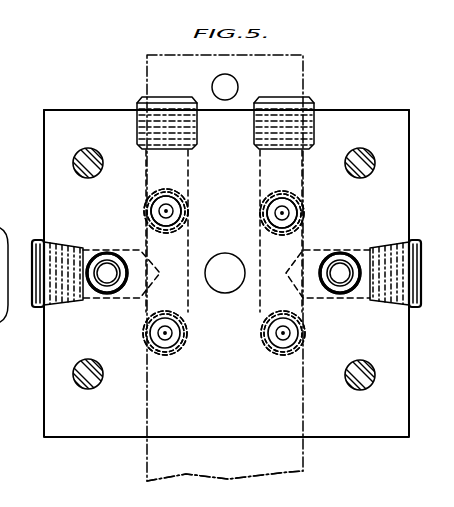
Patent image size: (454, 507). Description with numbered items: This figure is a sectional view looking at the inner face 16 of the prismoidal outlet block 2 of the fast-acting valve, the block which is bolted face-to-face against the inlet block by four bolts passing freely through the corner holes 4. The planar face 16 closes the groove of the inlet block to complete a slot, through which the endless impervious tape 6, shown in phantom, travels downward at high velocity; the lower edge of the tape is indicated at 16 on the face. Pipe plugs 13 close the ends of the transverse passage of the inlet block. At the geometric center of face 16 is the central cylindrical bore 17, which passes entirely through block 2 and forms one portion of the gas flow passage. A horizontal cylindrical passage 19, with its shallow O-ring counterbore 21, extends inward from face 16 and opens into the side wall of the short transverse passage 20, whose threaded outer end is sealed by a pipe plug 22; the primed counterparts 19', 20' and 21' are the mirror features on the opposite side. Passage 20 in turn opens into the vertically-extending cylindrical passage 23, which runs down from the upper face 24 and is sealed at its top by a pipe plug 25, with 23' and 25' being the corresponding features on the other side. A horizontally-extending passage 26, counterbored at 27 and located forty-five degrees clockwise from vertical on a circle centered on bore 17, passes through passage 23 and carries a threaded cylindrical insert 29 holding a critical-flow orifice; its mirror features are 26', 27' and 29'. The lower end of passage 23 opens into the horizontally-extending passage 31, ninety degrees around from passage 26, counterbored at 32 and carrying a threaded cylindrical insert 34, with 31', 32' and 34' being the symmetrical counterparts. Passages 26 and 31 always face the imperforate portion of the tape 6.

The outlet block 2 is at (380, 110).
The corner holes 4 is at (90, 154).
The impervious tape 6 is at (150, 53).
The pipe plugs 13 is at (8, 264).
The inner face 16 is at (226, 424).
The central cylindrical bore 17 is at (220, 257).
The cylindrical passage 19 is at (340, 264).
The left socket ring 19' is at (151, 273).
The transversely-extending cylindrical passage 20 is at (347, 287).
The left threaded stud 20' is at (102, 259).
The counterbore 21 is at (346, 292).
The left bore 21' is at (103, 289).
The pipe plug 22 is at (412, 240).
The vertically-extending cylindrical passage 23 is at (294, 191).
The left outer hole 23' is at (146, 204).
The upper face 24 is at (76, 110).
The pipe plug 25 is at (284, 190).
The left vertical threaded stud 25' is at (167, 190).
The horizontally-extending cylindrical passage 26 is at (261, 207).
The left upper boss 26' is at (187, 193).
The counterbore 27 is at (299, 211).
The left upper pin hole 27' is at (147, 211).
The cylindrical insert 29 is at (263, 213).
The left upper recess 29' is at (145, 211).
The horizontally-extending cylindrical passage 31 is at (261, 332).
The left lower recess 31' is at (143, 333).
The counterbore 32 is at (272, 338).
The left lower pin hole 32' is at (165, 350).
The cylindrical insert 34 is at (283, 353).
The left lower outer hole 34' is at (146, 335).